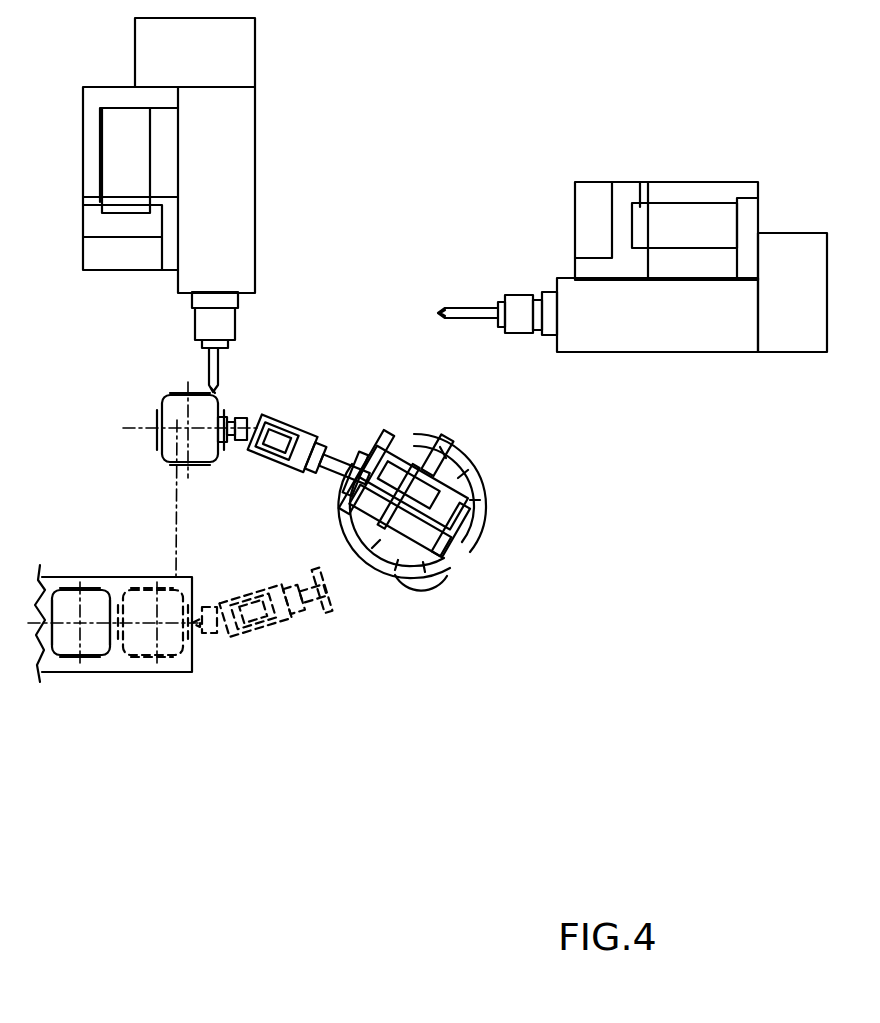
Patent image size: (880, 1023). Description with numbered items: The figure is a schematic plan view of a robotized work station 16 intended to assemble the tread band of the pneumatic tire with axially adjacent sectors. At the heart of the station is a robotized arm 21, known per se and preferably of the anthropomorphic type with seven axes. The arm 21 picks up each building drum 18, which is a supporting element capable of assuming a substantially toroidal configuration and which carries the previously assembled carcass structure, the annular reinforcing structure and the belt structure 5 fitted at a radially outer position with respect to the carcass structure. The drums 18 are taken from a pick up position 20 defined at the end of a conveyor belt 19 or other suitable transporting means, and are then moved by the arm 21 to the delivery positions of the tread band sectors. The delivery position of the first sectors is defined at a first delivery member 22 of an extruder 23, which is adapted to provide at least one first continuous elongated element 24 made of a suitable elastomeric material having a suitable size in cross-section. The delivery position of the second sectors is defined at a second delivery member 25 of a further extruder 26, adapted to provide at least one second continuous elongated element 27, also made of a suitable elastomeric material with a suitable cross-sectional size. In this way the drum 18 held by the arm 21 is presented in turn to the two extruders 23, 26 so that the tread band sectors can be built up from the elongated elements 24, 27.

The robotized work station 16 is at (260, 785).
The building drum 18 is at (178, 395).
The conveyor belt 19 is at (100, 577).
The belt structure 5 is at (176, 592).
The pick up position 20 is at (200, 612).
The robotized arm 21 is at (488, 462).
The first delivery member 22 is at (222, 366).
The extruder 23 is at (236, 132).
The elongated element 24 is at (216, 395).
The second delivery member 25 is at (478, 307).
The extruder 26 is at (615, 302).
The elongated element 27 is at (440, 312).